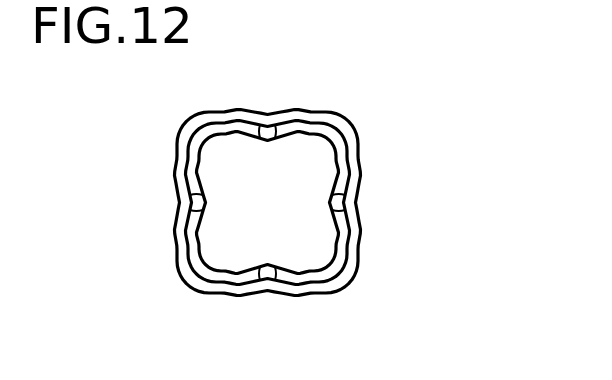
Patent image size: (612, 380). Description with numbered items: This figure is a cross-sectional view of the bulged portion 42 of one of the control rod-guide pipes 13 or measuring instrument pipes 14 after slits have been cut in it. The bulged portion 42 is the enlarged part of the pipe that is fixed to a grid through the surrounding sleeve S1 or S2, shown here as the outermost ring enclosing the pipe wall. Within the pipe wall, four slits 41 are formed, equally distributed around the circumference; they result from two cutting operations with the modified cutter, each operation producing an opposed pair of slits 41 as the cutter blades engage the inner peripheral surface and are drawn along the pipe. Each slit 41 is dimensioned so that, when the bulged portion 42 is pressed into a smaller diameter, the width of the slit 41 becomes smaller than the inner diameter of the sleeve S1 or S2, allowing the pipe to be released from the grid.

The sleeve S1 is at (291, 179).
The sleeve S2 is at (289, 113).
The control-rod guide pipe 13 is at (259, 231).
The measuring instrument pipe 14 is at (245, 277).
The slit 41 is at (262, 127).
The bulged portion 42 is at (333, 270).